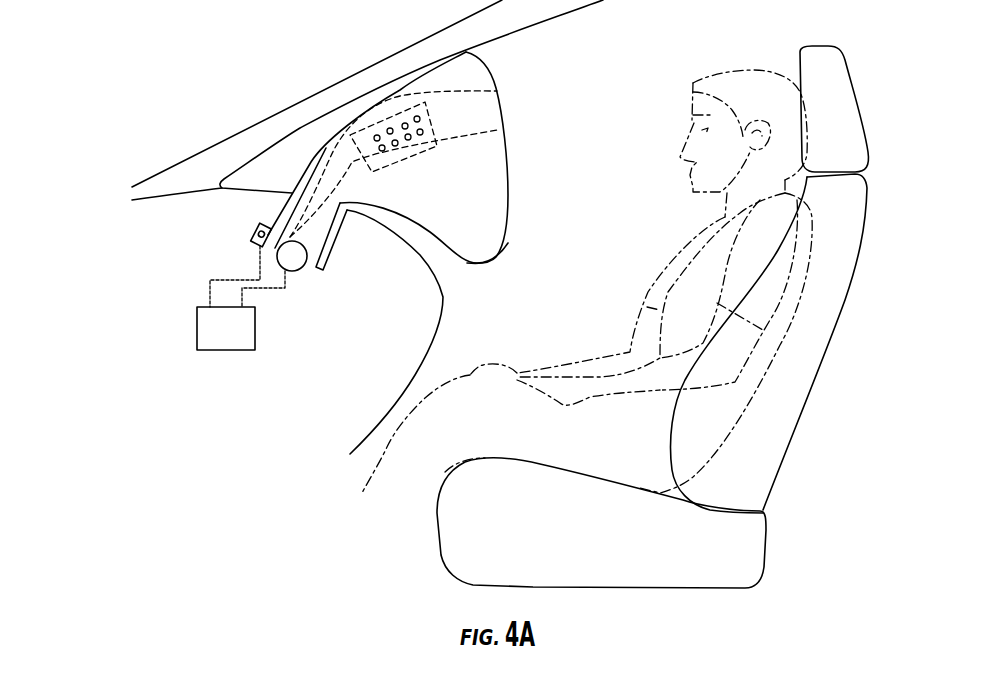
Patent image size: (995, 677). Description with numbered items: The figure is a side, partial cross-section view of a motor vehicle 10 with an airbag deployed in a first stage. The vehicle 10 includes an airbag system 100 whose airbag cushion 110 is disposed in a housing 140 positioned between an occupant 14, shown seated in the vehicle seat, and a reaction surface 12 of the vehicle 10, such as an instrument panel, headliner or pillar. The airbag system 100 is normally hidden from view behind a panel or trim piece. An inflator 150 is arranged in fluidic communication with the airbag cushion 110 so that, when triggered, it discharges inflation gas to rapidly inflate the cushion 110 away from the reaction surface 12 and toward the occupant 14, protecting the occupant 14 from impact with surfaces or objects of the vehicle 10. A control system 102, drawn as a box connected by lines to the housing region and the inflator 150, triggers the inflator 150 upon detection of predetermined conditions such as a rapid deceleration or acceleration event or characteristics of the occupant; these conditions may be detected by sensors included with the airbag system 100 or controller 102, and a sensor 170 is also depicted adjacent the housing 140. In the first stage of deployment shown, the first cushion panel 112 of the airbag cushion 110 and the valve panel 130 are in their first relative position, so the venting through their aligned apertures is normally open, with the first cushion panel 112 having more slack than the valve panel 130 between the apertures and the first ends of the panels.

The motor vehicle 10 is at (236, 91).
The reaction surface 12 is at (443, 287).
The occupant 14 is at (696, 301).
The airbag system 100 is at (512, 59).
The control system 102 is at (243, 338).
The airbag cushion 110 is at (507, 147).
The first cushion panel 112 is at (483, 184).
The valve panel 130 is at (460, 113).
The housing 140 is at (320, 268).
The inflator 150 is at (298, 271).
The sensor 170 is at (253, 243).